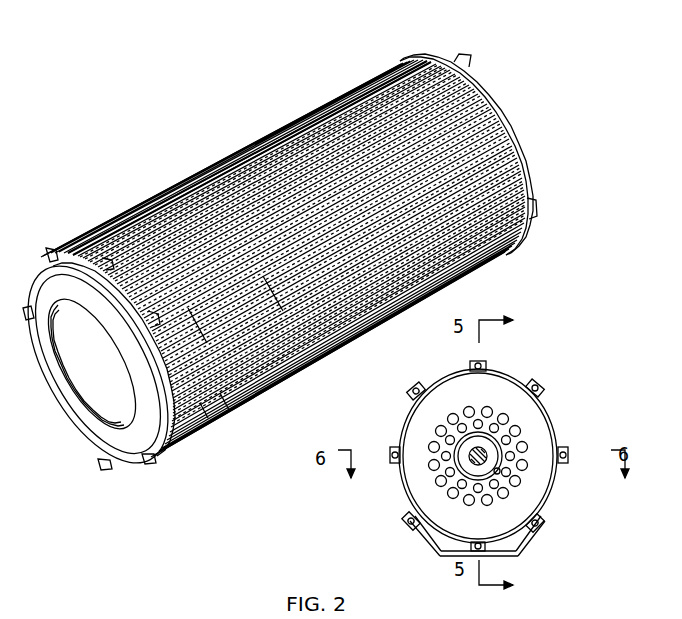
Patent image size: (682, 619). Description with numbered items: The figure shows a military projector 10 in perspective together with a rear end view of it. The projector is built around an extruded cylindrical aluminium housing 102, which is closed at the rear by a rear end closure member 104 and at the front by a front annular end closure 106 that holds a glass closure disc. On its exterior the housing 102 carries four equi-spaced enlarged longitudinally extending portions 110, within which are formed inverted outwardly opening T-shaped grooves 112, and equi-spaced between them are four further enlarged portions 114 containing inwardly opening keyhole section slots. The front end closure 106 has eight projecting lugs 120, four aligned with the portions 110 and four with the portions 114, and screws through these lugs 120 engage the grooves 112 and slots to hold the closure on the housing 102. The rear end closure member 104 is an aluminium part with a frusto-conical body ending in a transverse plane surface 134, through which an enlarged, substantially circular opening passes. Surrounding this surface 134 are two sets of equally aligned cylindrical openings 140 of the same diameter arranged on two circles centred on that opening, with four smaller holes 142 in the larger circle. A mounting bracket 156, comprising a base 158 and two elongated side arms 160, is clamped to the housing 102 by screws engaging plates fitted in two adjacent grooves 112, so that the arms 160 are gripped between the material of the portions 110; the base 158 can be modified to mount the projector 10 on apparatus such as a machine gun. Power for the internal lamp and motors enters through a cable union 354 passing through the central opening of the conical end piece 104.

In FIG. 1, the military projector 10 is at (186, 106).
In FIG. 1, the extruded cylindrical aluminium housing 102 is at (462, 100).
In FIG. 2, the rear end closure member 104 is at (543, 415).
In FIG. 1, the front annular end closure 106 is at (52, 393).
In FIG. 1, the enlarged longitudinally extending portions 110 is at (250, 125).
In FIG. 2, the enlarged longitudinally extending portions 110 is at (523, 375).
In FIG. 1, the inverted outwardly opening T-shaped grooves 112 is at (216, 390).
In FIG. 2, the inverted outwardly opening T-shaped grooves 112 is at (533, 378).
In FIG. 1, the enlarged portions 114 is at (181, 206).
In FIG. 1, the projecting lugs 120 is at (109, 226).
In FIG. 2, the transverse plane surface 134 is at (480, 430).
In FIG. 2, the cylindrical openings 140 is at (427, 458).
In FIG. 2, the smaller holes 142 is at (438, 408).
In FIG. 2, the mounting bracket 156 is at (517, 553).
In FIG. 2, the base 158 is at (448, 548).
In FIG. 2, the elongated side arms 160 is at (425, 545).
In FIG. 2, the union 354 is at (492, 465).